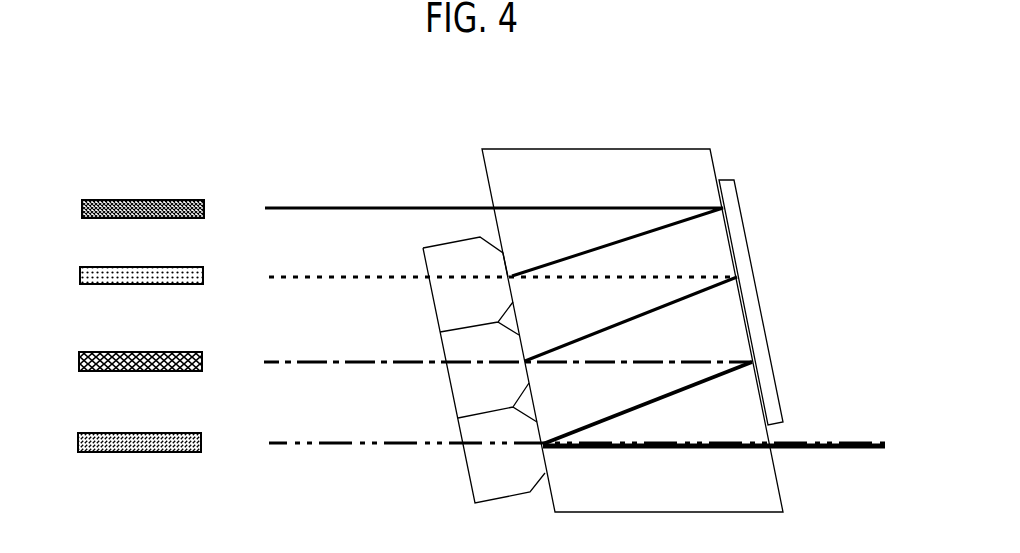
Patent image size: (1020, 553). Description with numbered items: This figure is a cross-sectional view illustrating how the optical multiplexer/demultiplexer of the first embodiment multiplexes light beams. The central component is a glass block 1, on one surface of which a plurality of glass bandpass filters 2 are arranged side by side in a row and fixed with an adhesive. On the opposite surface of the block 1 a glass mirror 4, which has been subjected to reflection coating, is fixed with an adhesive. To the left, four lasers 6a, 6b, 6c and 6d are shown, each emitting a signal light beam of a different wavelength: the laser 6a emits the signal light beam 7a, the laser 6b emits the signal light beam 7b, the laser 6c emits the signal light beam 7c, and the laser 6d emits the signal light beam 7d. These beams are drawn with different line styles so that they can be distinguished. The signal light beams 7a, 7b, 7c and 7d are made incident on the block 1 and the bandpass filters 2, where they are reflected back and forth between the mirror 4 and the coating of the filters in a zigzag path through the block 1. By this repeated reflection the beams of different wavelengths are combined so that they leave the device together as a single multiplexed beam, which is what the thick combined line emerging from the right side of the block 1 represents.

The block 1 is at (637, 168).
The bandpass filters 2 is at (443, 263).
The mirror 4 is at (757, 289).
The laser 6a is at (148, 200).
The laser 6b is at (108, 267).
The laser 6c is at (108, 351).
The laser 6d is at (108, 434).
The signal light beam 7a is at (278, 207).
The signal light beam 7b is at (293, 277).
The signal light beam 7c is at (293, 362).
The signal light beam 7d is at (293, 443).